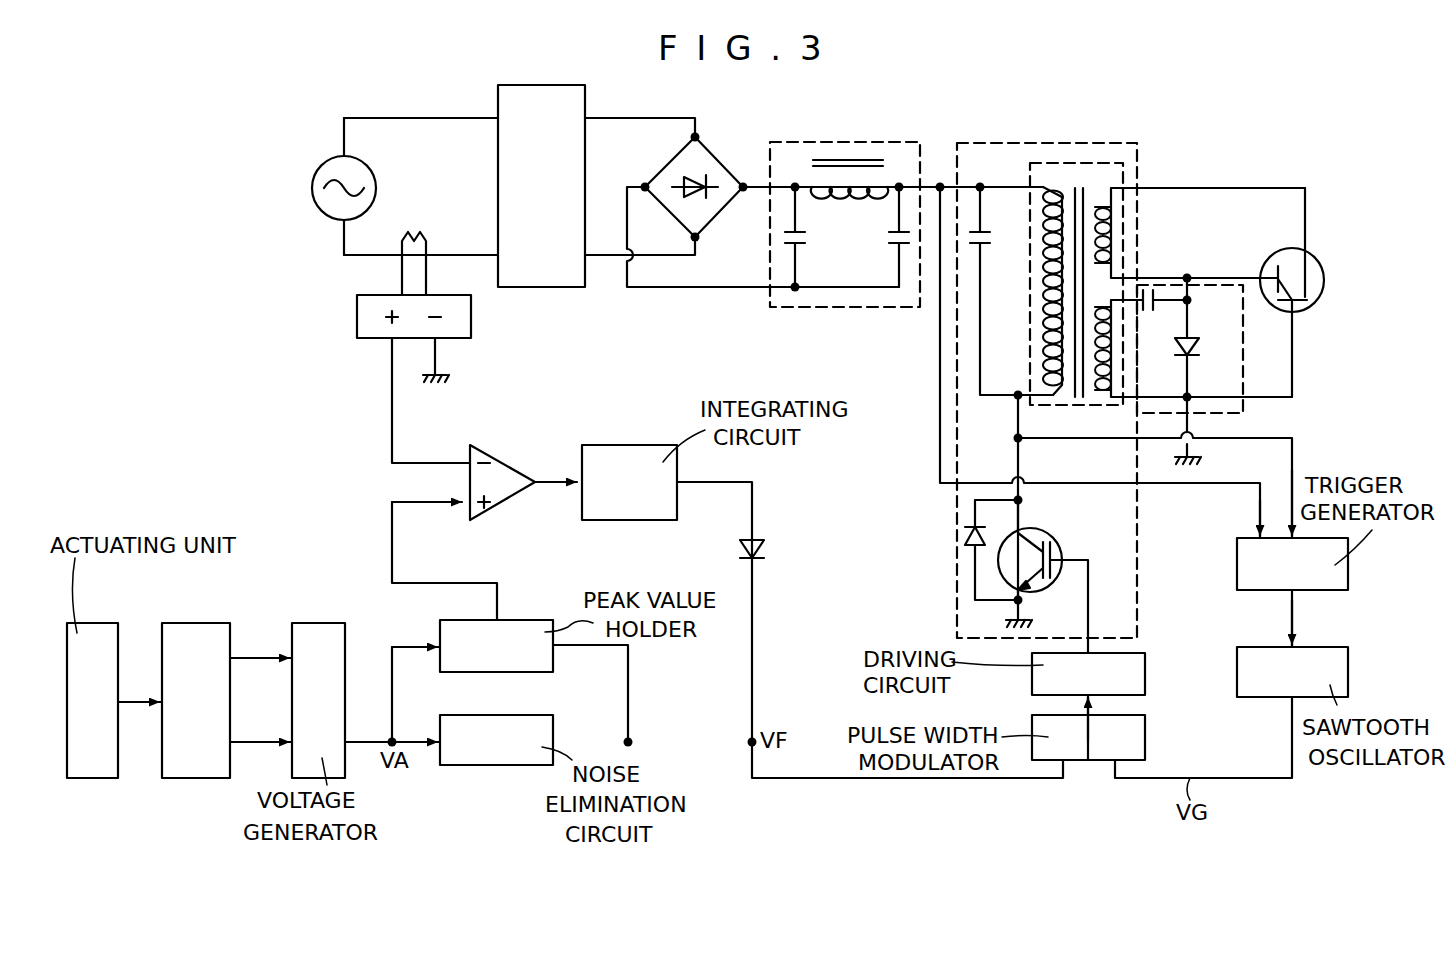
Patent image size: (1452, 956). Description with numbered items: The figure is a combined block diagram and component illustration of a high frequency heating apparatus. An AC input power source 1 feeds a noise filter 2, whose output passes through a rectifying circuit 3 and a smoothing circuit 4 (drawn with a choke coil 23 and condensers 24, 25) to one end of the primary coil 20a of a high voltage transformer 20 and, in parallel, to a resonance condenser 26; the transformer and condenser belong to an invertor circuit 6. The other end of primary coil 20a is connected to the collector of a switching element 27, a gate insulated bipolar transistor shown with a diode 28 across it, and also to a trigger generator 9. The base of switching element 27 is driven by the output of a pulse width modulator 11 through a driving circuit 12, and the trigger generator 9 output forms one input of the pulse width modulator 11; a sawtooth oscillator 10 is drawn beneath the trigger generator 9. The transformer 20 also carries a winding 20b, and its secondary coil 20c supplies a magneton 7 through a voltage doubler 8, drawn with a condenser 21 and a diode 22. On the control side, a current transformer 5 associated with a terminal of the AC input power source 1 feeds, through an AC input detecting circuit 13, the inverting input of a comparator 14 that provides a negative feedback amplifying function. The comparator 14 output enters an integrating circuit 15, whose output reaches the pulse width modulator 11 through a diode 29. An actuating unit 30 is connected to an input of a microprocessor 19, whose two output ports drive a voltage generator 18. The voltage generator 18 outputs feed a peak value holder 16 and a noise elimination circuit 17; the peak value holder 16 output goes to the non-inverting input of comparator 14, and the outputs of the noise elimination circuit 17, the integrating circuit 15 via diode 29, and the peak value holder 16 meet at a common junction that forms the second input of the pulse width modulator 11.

The AC input power source 1 is at (312, 187).
The noise filter 2 is at (498, 98).
The rectifying circuit 3 is at (712, 153).
The smoothing circuit 4 is at (903, 142).
The current transformer 5 is at (425, 235).
The invertor circuit 6 is at (1138, 145).
The magneton 7 is at (1318, 263).
The voltage doubler 8 is at (1242, 363).
The trigger generator 9 is at (1237, 560).
The sawtooth oscillator 10 is at (1237, 667).
The pulse width modulator 11 is at (1145, 740).
The driving circuit 12 is at (1032, 673).
The AC input detecting circuit 13 is at (471, 323).
The comparator 14 is at (503, 462).
The integrating circuit 15 is at (642, 445).
The peak value holder 16 is at (532, 620).
The noise elimination circuit 17 is at (543, 715).
The voltage generator 18 is at (322, 623).
The microprocessor 19 is at (200, 623).
The high voltage transformer 20 is at (1093, 163).
The primary coil 20a is at (1042, 190).
The secondary winding 20b is at (1115, 219).
The secondary coil 20c is at (1110, 306).
The capacitor 21 is at (1165, 308).
The diode 22 is at (1205, 366).
The choke coil 23 is at (847, 155).
The capacitor 24 is at (812, 237).
The capacitor 25 is at (892, 237).
The resonance condenser 26 is at (1011, 291).
The switching element 27 is at (1048, 532).
The diode 28 is at (967, 533).
The diode 29 is at (770, 551).
The actuating unit 30 is at (93, 622).